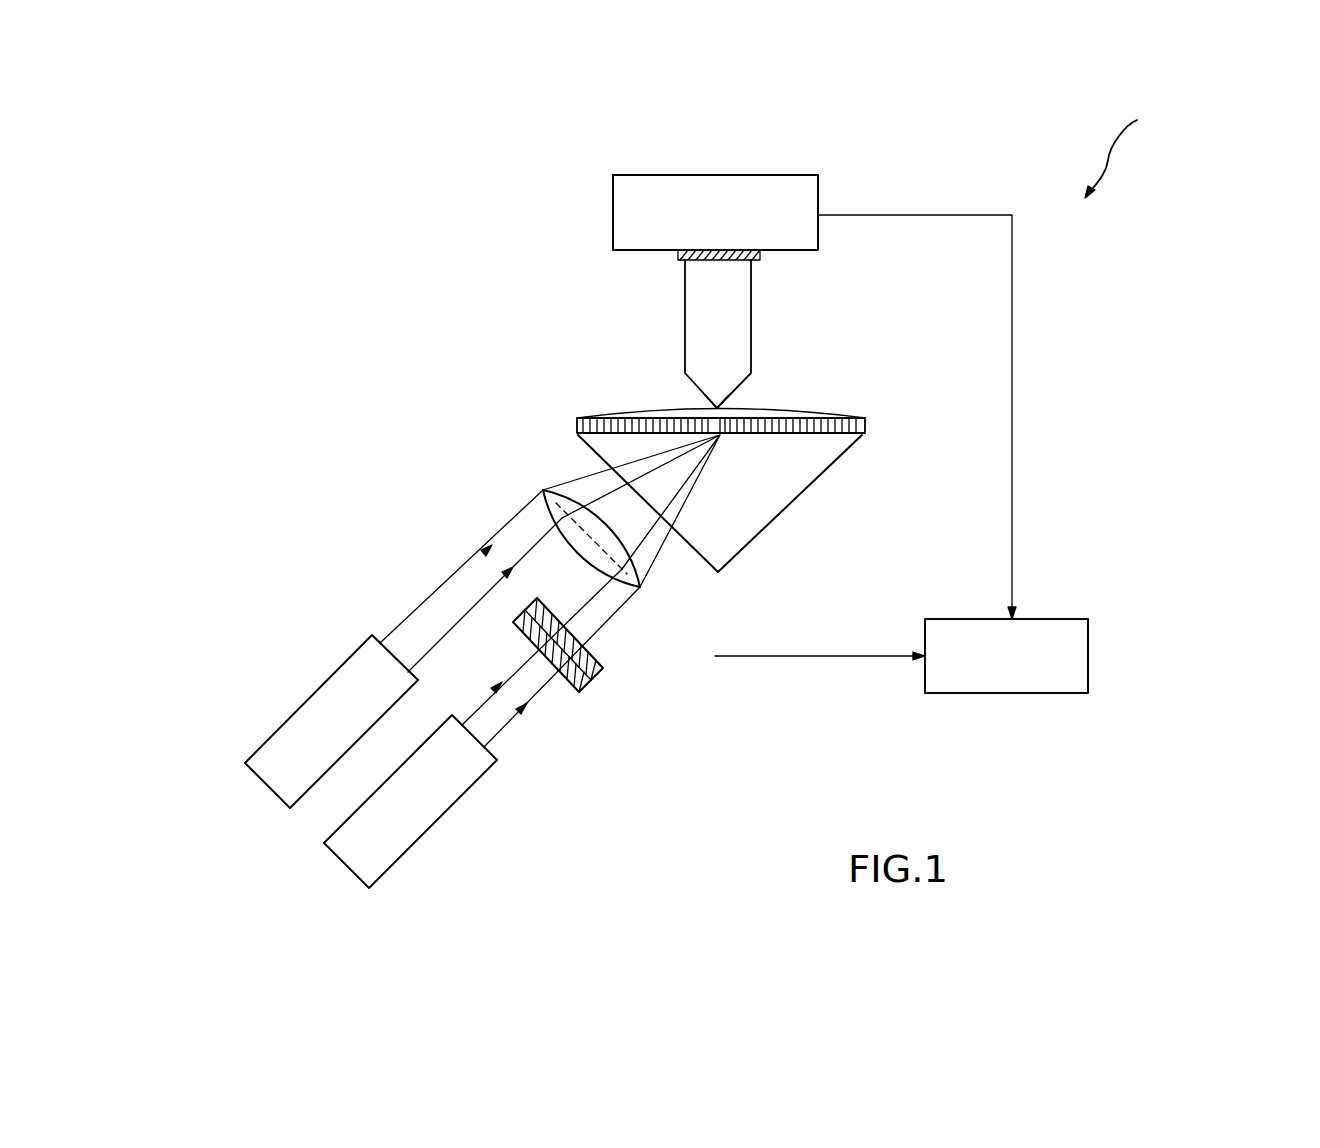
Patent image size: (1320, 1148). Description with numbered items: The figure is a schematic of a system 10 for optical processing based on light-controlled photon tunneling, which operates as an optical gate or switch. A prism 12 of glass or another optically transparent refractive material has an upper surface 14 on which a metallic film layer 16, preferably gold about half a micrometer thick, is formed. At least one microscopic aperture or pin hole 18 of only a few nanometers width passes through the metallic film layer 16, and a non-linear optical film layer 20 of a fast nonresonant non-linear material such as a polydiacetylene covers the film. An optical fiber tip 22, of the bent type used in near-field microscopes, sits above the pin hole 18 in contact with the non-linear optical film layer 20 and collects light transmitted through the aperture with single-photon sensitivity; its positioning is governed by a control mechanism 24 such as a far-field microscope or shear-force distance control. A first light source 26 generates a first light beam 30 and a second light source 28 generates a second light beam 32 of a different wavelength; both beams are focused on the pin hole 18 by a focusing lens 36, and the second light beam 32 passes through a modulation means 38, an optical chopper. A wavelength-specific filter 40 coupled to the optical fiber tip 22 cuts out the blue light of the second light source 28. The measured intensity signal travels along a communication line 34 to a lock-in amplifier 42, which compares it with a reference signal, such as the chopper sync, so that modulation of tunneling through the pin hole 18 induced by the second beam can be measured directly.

The system for optical processing 10 is at (1124, 141).
The prism 12 is at (800, 490).
The upper surface of prism 14 is at (865, 425).
The metallic film layer 16 is at (578, 424).
The microscopic aperture or pin hole 18 is at (728, 437).
The non-linear optical film layer 20 is at (681, 408).
The optical fiber tip 22 is at (751, 322).
The control mechanism 24 is at (740, 175).
The first light source 26 is at (330, 674).
The second light source 28 is at (460, 797).
The first light beam 30 is at (456, 567).
The second light beam 32 is at (507, 730).
The communication line 34 is at (1012, 364).
The focusing lens 36 is at (543, 490).
The modulation means (optical chopper) 38 is at (588, 652).
The wavelength-specific filter 40 is at (760, 259).
The lock-in amplifier 42 is at (1088, 648).